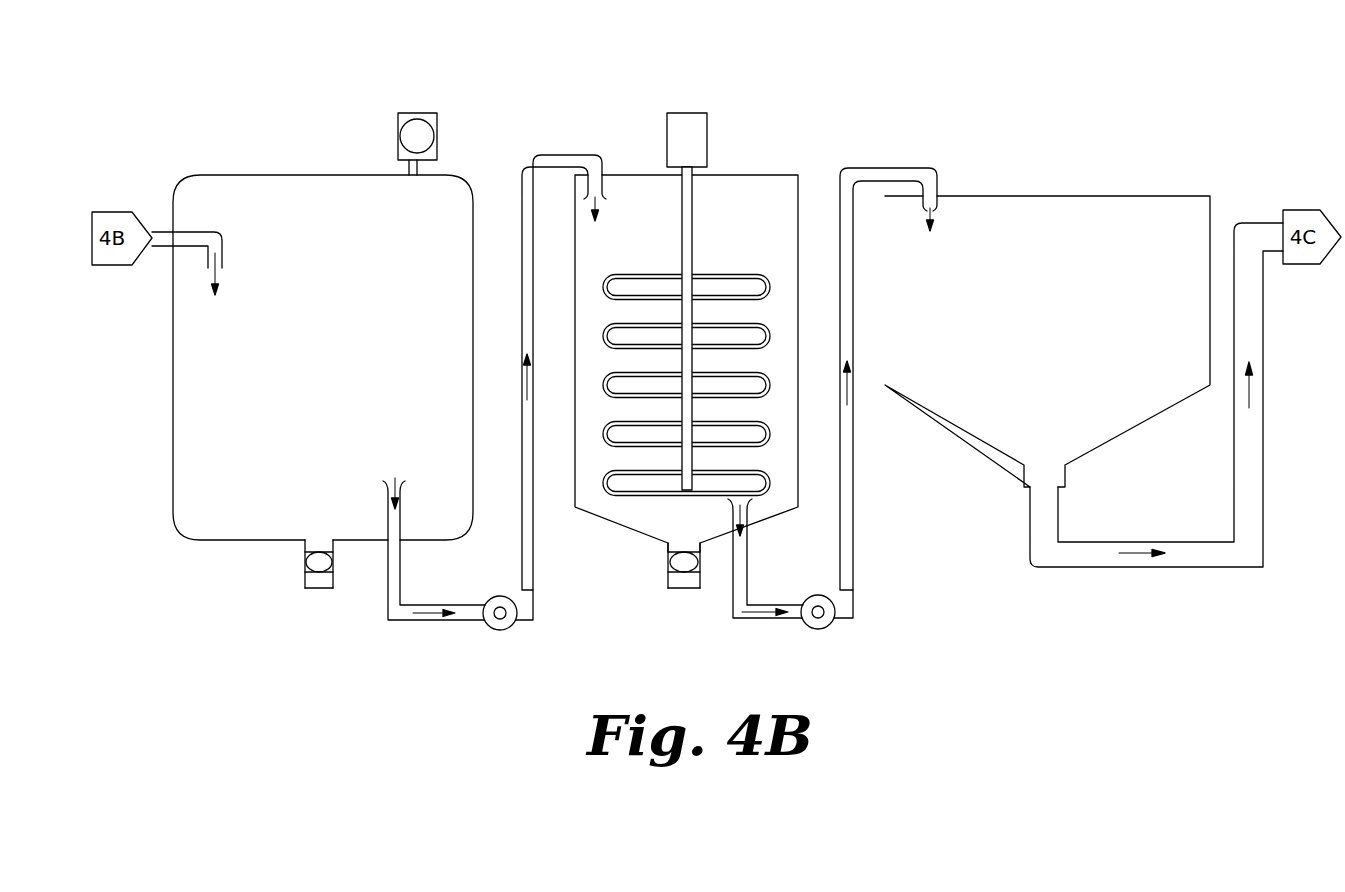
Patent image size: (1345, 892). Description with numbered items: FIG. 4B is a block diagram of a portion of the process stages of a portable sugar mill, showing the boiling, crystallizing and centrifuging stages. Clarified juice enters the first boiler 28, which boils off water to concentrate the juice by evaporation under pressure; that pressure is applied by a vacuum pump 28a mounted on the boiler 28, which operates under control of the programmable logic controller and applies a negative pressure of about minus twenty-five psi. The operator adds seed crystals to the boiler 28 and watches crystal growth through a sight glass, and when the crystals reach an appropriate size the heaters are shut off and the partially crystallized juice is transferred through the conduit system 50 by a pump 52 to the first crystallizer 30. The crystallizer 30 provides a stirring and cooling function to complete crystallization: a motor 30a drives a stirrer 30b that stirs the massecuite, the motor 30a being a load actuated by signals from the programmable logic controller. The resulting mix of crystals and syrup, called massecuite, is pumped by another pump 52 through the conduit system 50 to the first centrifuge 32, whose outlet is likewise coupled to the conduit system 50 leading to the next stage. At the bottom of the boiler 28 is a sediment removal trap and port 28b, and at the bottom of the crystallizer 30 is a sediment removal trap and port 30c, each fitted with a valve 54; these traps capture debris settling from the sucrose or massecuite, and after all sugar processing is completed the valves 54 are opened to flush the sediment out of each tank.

The first boiler 28 is at (231, 175).
The vacuum pump 28a is at (420, 113).
The sediment removal trap and port 28b is at (311, 531).
The first crystallizer 30 is at (761, 175).
The motor 30a is at (687, 113).
The stirrer 30b is at (619, 497).
The sediment removal trap and port 30c is at (681, 529).
The first centrifuge 32 is at (1125, 196).
The conduit system 50 is at (522, 545).
The pump 52 is at (507, 630).
The valve 54 is at (305, 569).